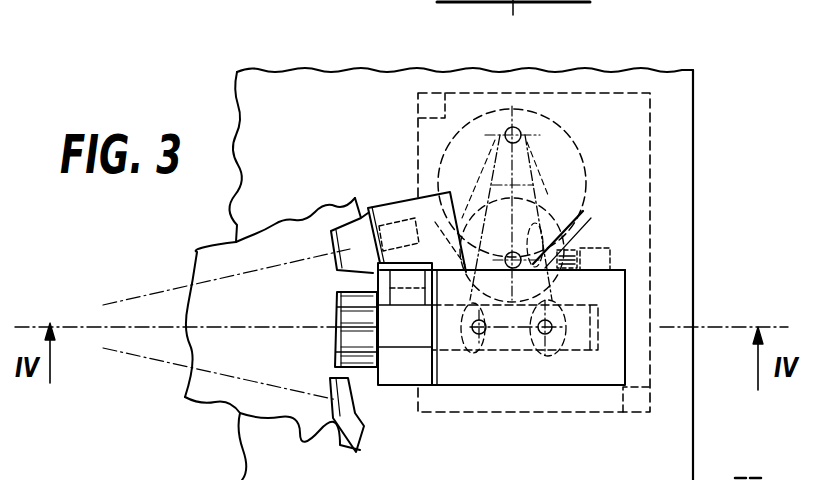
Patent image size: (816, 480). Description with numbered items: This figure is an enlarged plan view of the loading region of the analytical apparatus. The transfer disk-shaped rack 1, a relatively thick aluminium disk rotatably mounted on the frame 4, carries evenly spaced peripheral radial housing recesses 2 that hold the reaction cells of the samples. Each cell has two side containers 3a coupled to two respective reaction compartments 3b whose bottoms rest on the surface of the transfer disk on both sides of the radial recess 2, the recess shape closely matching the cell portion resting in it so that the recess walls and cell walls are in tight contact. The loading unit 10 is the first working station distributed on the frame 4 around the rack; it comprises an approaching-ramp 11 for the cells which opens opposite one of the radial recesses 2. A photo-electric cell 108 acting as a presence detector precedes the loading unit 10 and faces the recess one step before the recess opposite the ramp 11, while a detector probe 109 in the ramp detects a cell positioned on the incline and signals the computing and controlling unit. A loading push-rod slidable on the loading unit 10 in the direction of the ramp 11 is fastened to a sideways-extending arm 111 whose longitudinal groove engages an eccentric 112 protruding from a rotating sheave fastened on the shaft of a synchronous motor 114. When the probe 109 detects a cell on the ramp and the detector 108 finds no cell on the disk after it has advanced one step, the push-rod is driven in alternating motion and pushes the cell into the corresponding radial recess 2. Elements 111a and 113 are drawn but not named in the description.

The transfer disk-shaped rack 1 is at (222, 252).
The radial housing recess 2 is at (358, 412).
The side container 3a is at (341, 297).
The reaction compartment 3b is at (340, 342).
The frame 4 is at (276, 80).
The loading unit 10 is at (700, 399).
The approaching-ramp 11 is at (408, 347).
The photo-electric cell 108 is at (403, 232).
The detector probe 109 is at (425, 268).
The arm 111 is at (543, 176).
The lever pin 111a is at (580, 216).
The eccentric 112 is at (567, 243).
The base plate 113 is at (567, 290).
The synchronous motor 114 is at (565, 149).